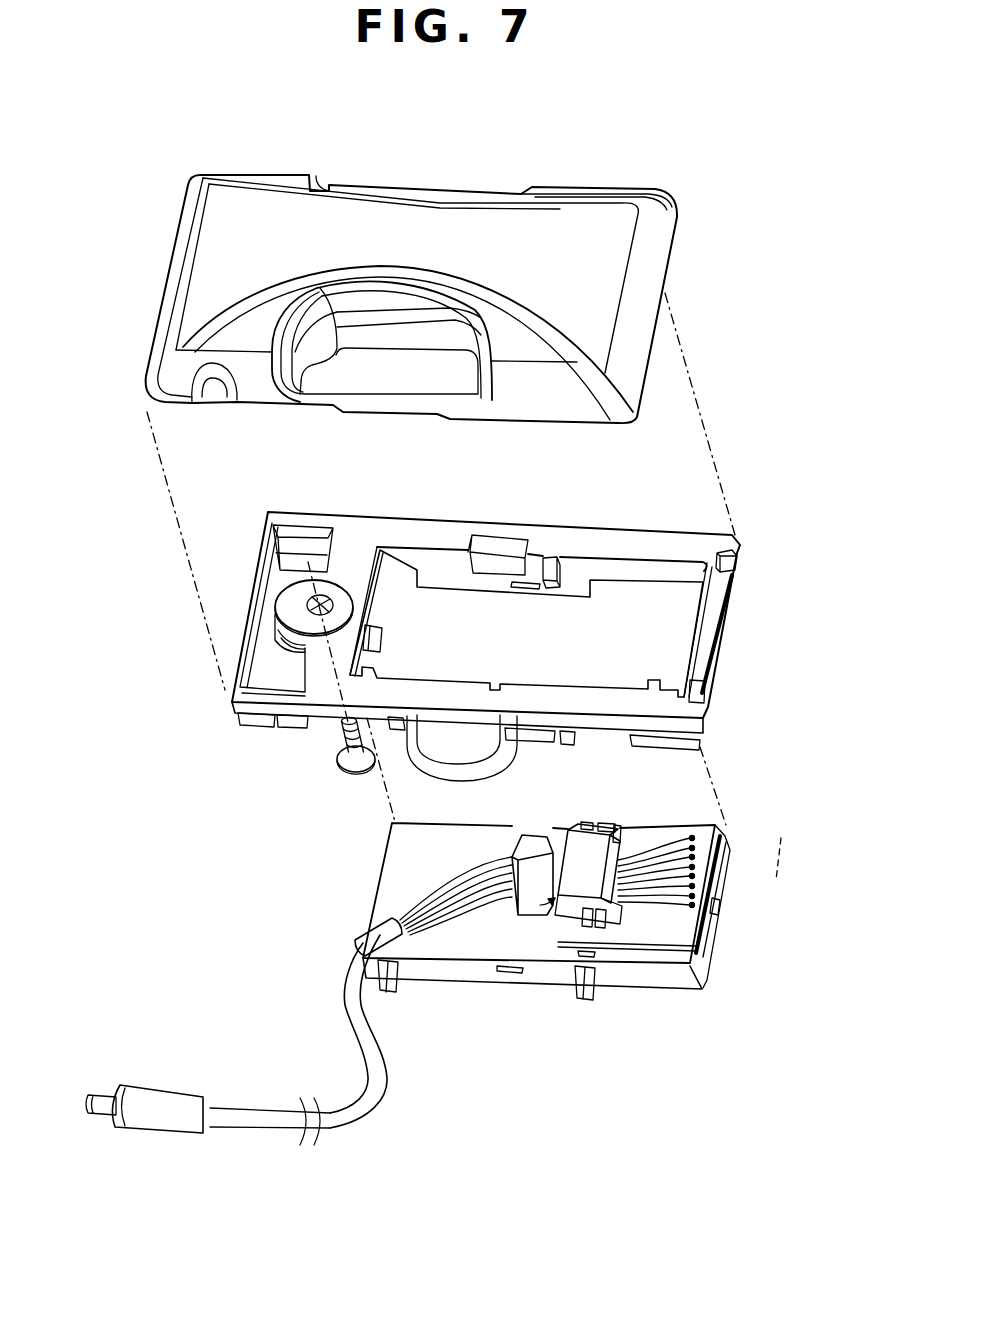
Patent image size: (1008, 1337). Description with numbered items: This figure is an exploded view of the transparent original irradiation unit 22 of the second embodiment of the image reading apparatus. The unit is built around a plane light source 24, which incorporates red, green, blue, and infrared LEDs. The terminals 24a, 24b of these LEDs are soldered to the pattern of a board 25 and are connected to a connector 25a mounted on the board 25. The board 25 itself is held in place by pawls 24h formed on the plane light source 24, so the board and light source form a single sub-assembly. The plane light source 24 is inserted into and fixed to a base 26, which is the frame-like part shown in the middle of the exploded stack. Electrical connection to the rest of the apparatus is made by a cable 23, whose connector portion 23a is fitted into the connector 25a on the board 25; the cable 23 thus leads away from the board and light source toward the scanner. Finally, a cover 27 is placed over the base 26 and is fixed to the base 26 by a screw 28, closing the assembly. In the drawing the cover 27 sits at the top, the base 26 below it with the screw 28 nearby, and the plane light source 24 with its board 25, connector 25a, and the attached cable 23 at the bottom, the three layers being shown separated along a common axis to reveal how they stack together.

The transparent original irradiation unit 22 is at (820, 143).
The cable 23 is at (380, 1096).
The connector portion 23a is at (525, 912).
The plane light source 24 is at (703, 967).
The terminal 24a is at (692, 908).
The terminal 24b is at (717, 903).
The pawls 24h is at (620, 824).
The board 25 is at (660, 930).
The connector 25a is at (576, 892).
The base 26 is at (698, 647).
The cover 27 is at (173, 273).
The screw 28 is at (345, 778).